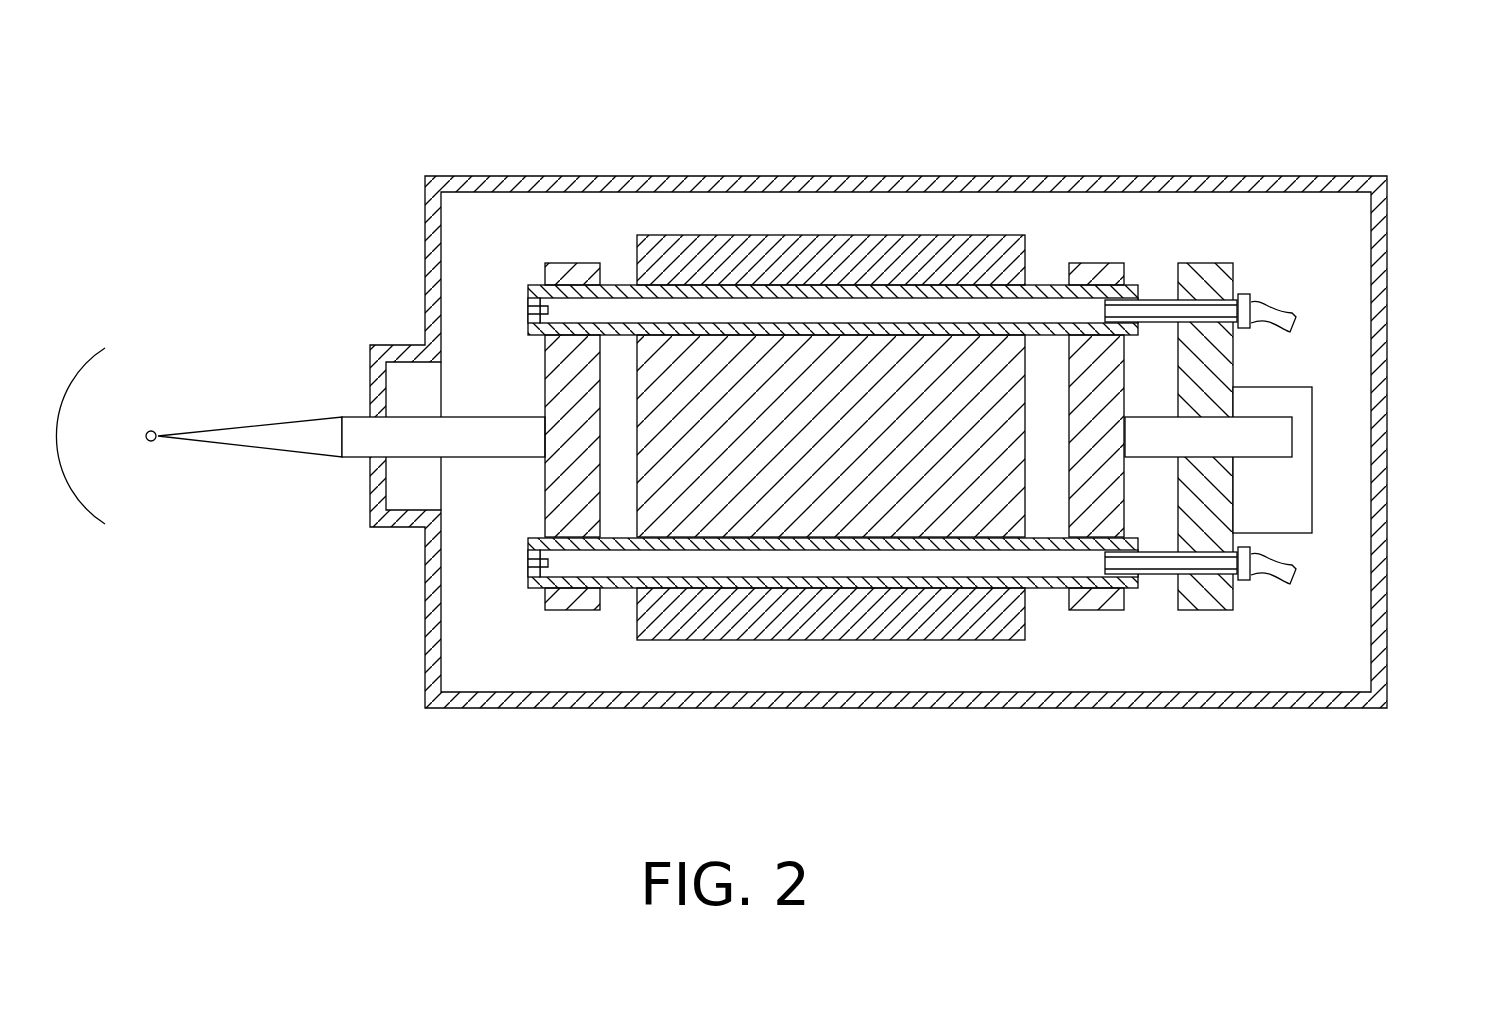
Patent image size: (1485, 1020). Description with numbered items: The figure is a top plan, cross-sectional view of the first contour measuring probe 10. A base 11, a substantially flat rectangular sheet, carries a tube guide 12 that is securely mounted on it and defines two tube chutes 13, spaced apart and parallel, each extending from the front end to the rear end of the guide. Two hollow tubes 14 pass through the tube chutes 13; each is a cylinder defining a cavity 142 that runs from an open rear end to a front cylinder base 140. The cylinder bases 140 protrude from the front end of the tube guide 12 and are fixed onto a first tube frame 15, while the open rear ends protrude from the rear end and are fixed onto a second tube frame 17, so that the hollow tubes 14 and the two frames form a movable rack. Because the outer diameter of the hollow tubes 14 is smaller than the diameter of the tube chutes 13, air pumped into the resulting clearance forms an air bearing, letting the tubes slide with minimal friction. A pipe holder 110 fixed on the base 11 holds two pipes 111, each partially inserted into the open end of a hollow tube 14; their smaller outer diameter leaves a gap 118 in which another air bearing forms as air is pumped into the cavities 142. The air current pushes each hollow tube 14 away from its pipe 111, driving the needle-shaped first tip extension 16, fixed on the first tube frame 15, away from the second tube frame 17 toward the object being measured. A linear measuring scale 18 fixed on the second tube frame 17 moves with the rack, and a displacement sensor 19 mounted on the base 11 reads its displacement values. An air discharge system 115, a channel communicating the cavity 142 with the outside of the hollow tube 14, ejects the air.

The first contour measuring probe 10 is at (478, 102).
The base 11 is at (477, 213).
The tube guide 12 is at (895, 248).
The tube chutes 13 is at (818, 262).
The hollow tubes 14 is at (690, 290).
The cavity 142 is at (940, 568).
The first tube frame 15 is at (567, 372).
The first tip extension 16 is at (428, 436).
The second tube frame 17 is at (1090, 270).
The linear measuring scale 18 is at (1268, 435).
The displacement sensor 19 is at (1285, 518).
The pipe holder 110 is at (1195, 282).
The pipes 111 is at (1235, 300).
The air discharge system 115 is at (518, 291).
The gap 118 is at (1128, 295).
The cylinder base 140 is at (530, 552).